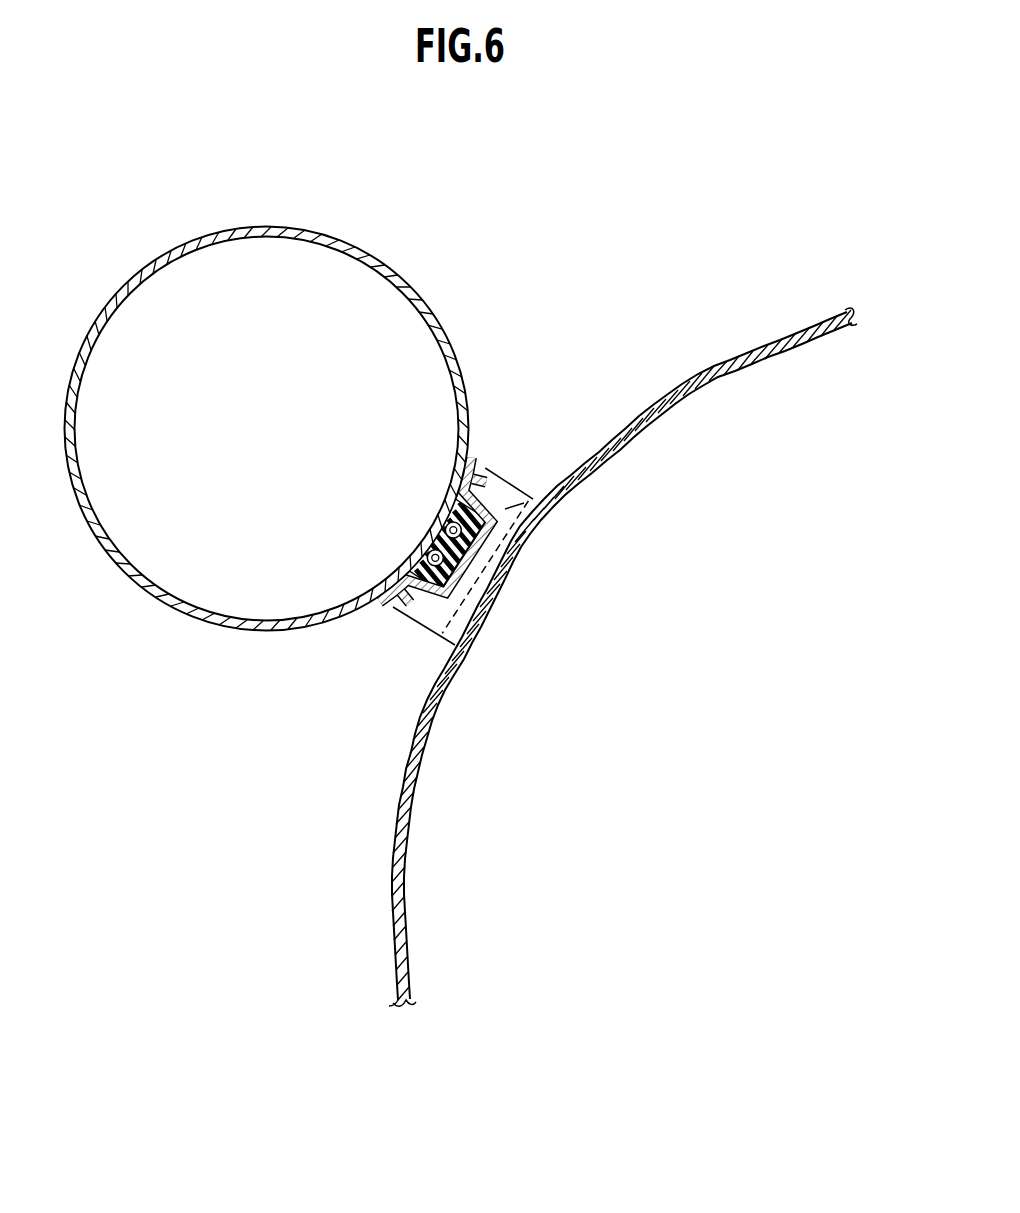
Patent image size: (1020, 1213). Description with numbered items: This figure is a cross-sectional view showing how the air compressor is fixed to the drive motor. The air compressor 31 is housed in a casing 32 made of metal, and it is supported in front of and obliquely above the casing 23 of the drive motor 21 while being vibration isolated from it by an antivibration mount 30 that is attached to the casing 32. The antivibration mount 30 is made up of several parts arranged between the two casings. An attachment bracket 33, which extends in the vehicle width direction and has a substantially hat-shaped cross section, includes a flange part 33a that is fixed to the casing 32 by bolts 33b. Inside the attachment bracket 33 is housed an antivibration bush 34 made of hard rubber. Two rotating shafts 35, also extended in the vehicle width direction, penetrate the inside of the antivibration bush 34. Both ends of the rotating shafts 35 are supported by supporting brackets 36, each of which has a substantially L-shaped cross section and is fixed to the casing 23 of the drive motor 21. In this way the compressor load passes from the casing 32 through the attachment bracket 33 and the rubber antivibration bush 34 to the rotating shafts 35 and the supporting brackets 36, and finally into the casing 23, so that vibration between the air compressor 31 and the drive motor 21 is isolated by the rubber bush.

The drive motor 21 is at (769, 606).
The casing 23 is at (795, 332).
The antivibration mount 30 is at (431, 561).
The air compressor 31 is at (284, 451).
The casing 32 is at (455, 341).
The attachment bracket 33 is at (481, 554).
The flange part 33a is at (470, 461).
The bolts 33b is at (474, 479).
The antivibration bush 34 is at (443, 513).
The rotating shafts 35 is at (445, 507).
The supporting brackets 36 is at (533, 505).